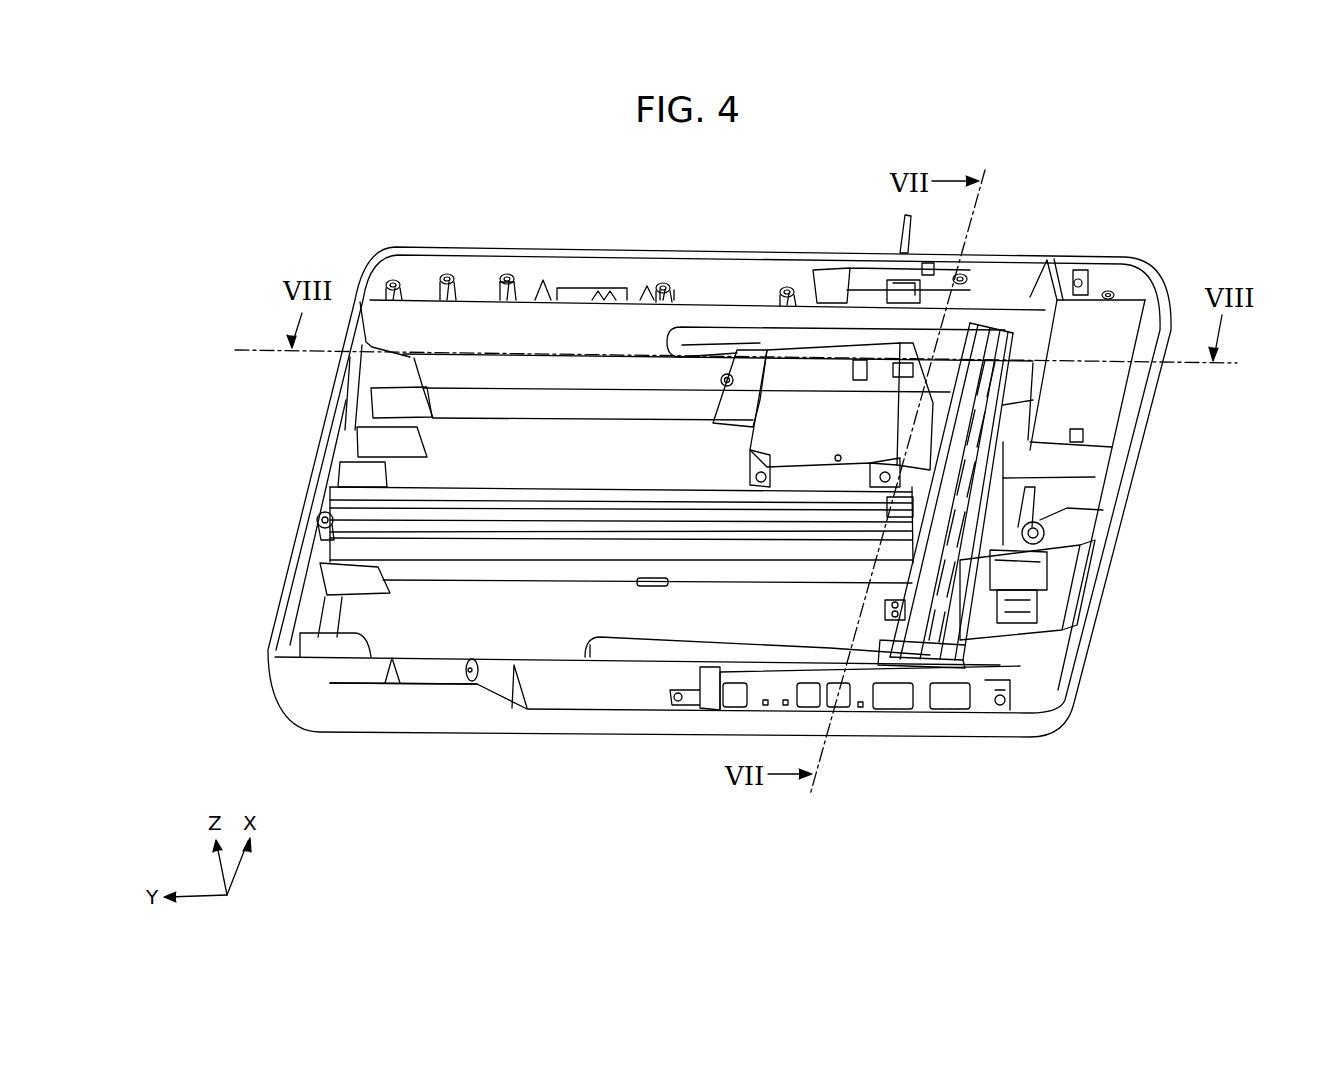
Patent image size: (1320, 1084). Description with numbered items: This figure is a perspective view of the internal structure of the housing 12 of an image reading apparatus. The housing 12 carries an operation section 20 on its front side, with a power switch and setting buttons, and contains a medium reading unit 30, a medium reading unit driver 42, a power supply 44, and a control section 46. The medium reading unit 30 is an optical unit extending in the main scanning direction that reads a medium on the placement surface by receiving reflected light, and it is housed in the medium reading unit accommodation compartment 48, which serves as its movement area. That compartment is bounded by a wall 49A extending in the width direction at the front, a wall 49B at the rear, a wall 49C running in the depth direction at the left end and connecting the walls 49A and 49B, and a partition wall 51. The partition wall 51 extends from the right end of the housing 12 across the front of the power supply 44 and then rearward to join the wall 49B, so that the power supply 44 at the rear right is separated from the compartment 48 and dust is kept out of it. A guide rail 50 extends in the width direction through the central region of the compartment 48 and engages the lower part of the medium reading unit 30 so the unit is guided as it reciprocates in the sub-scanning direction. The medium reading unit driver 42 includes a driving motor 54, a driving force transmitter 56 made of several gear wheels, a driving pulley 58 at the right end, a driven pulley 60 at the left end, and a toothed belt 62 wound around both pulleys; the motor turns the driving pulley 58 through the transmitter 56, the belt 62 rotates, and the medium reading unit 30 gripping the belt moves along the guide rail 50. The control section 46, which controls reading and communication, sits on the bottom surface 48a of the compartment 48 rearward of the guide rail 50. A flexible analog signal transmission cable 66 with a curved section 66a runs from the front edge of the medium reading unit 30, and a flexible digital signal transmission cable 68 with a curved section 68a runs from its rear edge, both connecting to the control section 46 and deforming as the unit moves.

The housing 12 is at (1012, 742).
The operation section 20 is at (918, 703).
The medium reading unit 30 is at (878, 601).
The medium reading unit driver 42 is at (1072, 543).
The power supply 44 is at (1117, 338).
The control section 46 is at (807, 377).
The medium reading unit accommodation compartment 48 is at (550, 450).
The bottom surface 48a is at (507, 273).
The wall 49A is at (540, 678).
The wall 49B is at (487, 327).
The wall 49C is at (362, 358).
The guide rail 50 is at (350, 480).
The partition wall 51 is at (1025, 387).
The driving motor 54 is at (1007, 567).
The driving force transmitter 56 is at (1030, 607).
The driving pulley 58 is at (1053, 513).
The driven pulley 60 is at (318, 520).
The toothed belt 62 is at (387, 566).
The analog signal transmission cable 66 is at (485, 395).
The curved section 66a is at (593, 650).
The digital signal transmission cable 68 is at (720, 333).
The curved section 68a is at (667, 283).